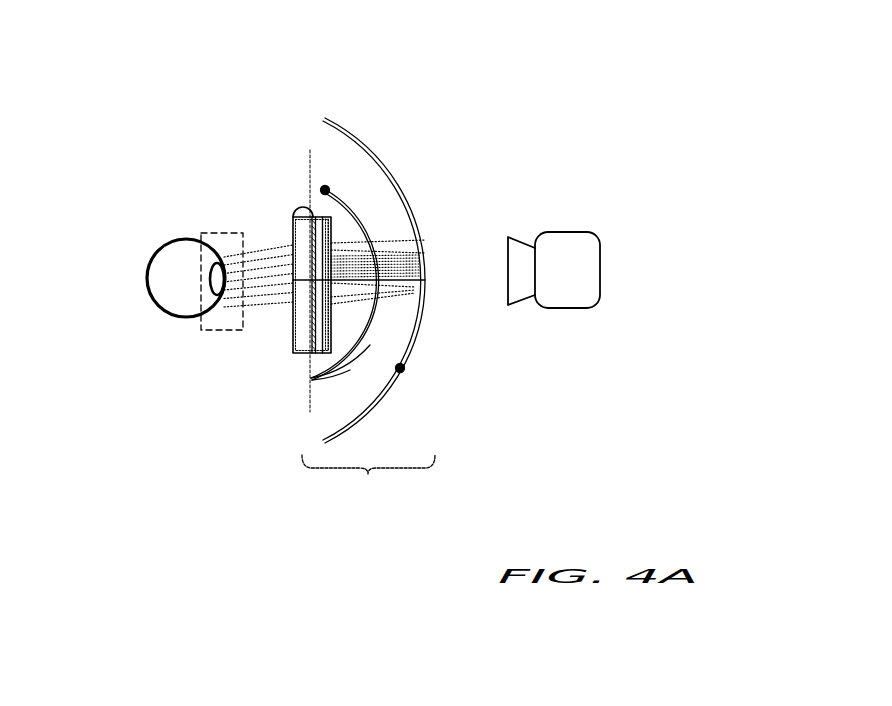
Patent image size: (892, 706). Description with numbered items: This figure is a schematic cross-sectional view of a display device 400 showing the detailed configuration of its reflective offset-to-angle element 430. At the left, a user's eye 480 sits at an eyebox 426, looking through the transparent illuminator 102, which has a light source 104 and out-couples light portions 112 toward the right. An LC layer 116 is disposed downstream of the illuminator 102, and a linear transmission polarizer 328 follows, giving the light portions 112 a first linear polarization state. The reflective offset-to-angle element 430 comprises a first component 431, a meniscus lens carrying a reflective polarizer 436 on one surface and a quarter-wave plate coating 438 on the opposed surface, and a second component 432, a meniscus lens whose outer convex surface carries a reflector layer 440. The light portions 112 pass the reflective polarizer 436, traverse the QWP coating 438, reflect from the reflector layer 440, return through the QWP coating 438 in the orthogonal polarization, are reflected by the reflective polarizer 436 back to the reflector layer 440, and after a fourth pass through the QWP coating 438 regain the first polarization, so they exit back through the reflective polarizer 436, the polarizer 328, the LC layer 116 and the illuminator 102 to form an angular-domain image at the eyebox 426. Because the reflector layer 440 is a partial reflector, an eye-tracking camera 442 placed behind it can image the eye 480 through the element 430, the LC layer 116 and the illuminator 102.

The display device 400 is at (580, 137).
The user's eye 480 is at (151, 302).
The eyebox 426 is at (214, 330).
The illuminator 102 is at (272, 264).
The light source 104 is at (298, 198).
The LC layer 116 is at (306, 327).
The light portions 112 is at (403, 253).
The linear transmission polarizer 328 is at (330, 325).
The reflective polarizer 436 is at (322, 373).
The quarter-wave plate coating 438 is at (345, 360).
The reflector layer 440 is at (395, 173).
The first component 431 is at (325, 188).
The second component 432 is at (400, 368).
The reflective offset-to-angle element 430 is at (368, 483).
The eye-tracking camera 442 is at (590, 280).